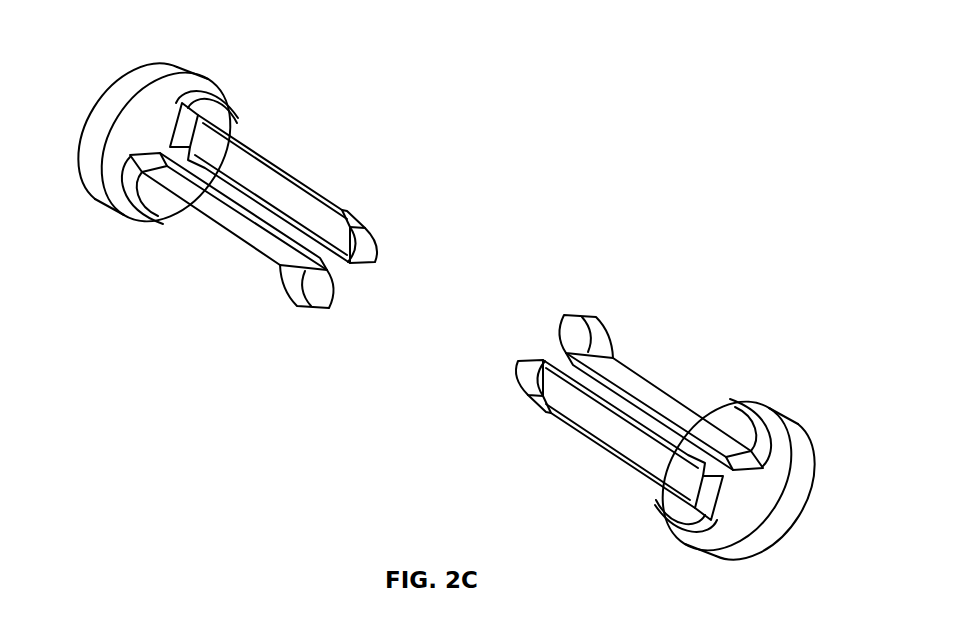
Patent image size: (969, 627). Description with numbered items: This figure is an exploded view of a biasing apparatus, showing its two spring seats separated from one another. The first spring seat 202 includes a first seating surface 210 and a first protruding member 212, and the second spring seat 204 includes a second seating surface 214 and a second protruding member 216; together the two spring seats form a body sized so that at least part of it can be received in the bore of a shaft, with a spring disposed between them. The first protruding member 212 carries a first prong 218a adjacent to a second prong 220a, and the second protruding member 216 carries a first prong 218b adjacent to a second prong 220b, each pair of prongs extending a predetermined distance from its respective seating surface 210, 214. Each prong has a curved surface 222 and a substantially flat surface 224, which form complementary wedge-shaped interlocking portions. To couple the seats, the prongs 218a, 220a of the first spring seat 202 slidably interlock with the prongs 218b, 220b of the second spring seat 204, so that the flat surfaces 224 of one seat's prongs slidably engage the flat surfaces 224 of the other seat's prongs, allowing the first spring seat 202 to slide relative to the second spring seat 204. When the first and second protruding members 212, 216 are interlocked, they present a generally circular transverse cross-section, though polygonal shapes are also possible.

The first spring seat 202 is at (113, 103).
The second spring seat 204 is at (810, 436).
The first seating surface 210 is at (165, 117).
The first protruding member 212 is at (193, 324).
The second seating surface 214 is at (742, 490).
The second protruding member 216 is at (700, 300).
The first prong 218a is at (313, 187).
The first prong 218b is at (702, 390).
The second prong 220a is at (226, 262).
The second prong 220b is at (595, 448).
The curved surface 222 is at (380, 247).
The flat surface 224 is at (262, 175).